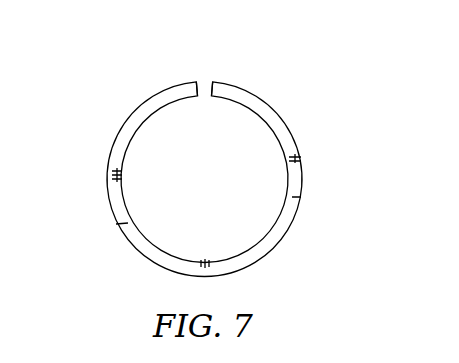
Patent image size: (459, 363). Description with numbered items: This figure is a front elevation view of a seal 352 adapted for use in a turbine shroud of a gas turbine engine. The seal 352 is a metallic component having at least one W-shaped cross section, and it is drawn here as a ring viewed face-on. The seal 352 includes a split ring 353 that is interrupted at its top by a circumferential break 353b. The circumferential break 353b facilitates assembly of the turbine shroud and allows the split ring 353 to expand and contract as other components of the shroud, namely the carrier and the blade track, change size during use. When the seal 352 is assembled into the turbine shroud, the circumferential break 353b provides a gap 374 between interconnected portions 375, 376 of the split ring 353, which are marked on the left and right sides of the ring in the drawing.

The seal 352 is at (270, 85).
The split ring 353 is at (308, 199).
The circumferential break 353b is at (205, 77).
The gap 374 is at (200, 104).
The interconnected portion 375 is at (109, 225).
The interconnected portion 376 is at (296, 154).